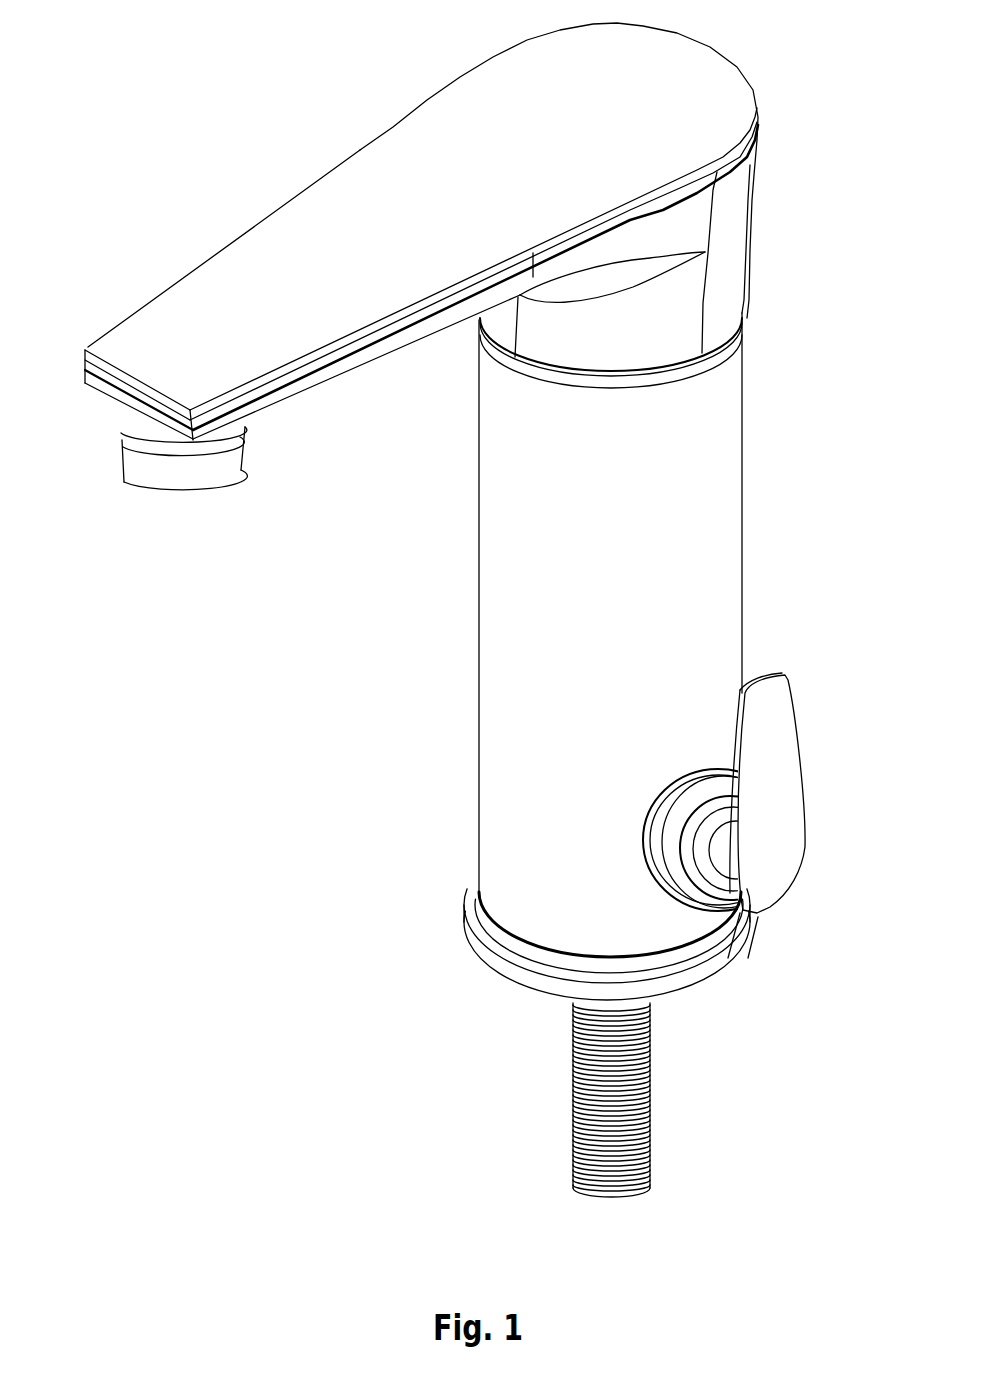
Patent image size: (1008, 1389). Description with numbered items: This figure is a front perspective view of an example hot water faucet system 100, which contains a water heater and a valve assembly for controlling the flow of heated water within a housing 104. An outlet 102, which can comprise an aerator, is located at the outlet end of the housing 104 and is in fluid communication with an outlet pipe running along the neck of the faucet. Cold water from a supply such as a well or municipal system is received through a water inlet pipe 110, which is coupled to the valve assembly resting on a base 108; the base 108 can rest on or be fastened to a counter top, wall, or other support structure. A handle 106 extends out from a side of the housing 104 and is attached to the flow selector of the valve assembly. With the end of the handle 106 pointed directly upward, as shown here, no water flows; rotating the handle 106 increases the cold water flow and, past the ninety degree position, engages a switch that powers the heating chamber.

The hot water faucet system 100 is at (135, 45).
The outlet 102 is at (123, 443).
The housing 104 is at (742, 343).
The handle 106 is at (800, 747).
The base 108 is at (757, 918).
The water inlet pipe 110 is at (653, 1093).